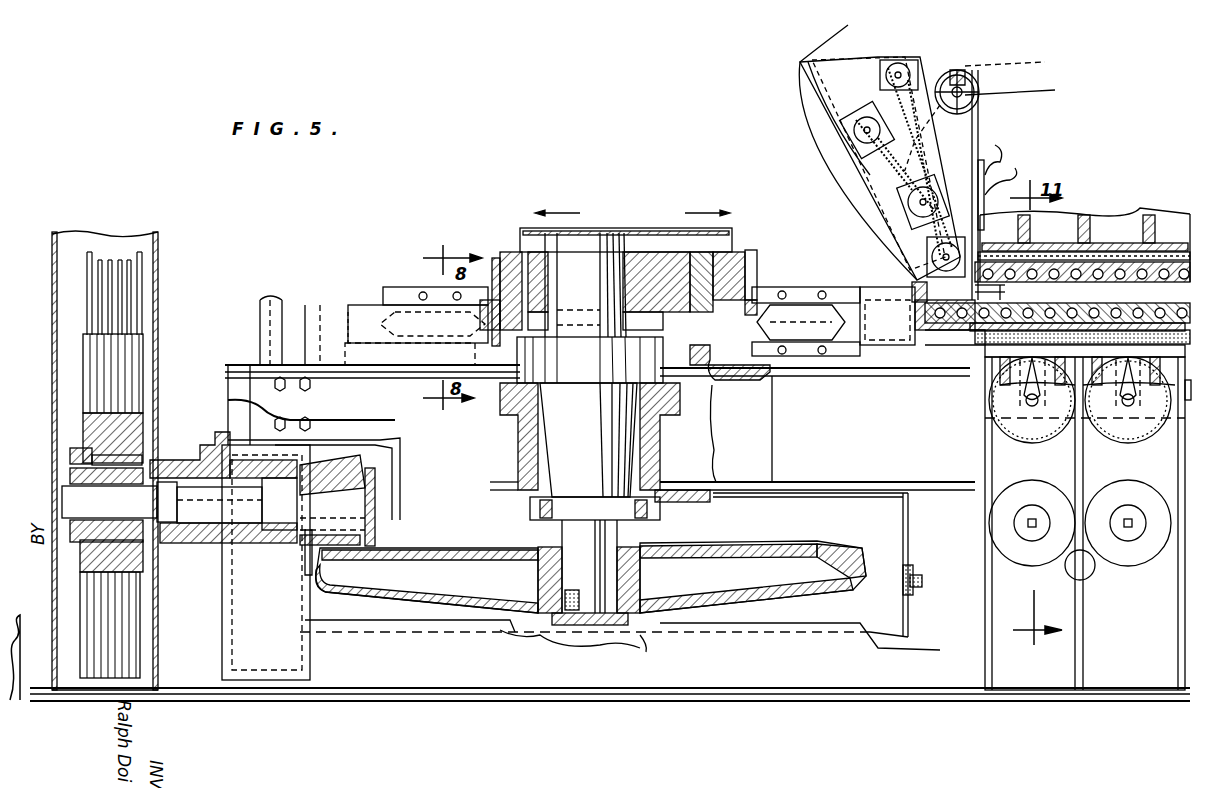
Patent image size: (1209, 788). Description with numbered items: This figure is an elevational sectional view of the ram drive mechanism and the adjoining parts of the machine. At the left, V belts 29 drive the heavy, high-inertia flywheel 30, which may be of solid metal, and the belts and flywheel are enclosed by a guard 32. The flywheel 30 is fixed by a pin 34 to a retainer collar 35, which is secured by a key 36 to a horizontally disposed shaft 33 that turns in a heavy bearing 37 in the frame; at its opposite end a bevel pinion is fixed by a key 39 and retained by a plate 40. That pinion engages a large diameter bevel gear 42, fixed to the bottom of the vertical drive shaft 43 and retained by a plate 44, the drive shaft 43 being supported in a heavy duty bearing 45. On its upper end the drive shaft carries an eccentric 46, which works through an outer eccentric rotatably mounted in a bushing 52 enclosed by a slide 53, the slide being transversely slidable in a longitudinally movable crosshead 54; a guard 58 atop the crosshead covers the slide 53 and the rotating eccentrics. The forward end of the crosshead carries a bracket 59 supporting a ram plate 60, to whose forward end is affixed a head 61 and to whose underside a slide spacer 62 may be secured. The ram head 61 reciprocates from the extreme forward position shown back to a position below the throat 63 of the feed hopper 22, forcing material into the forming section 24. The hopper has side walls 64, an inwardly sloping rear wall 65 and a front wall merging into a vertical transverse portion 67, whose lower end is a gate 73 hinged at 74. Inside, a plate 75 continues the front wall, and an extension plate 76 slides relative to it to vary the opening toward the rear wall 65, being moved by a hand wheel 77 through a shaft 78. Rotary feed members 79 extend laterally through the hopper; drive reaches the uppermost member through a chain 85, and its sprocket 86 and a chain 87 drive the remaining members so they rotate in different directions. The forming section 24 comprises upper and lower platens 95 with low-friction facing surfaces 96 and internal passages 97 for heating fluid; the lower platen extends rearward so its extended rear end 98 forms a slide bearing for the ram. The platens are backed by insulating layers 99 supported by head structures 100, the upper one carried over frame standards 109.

The V belts 29 is at (140, 280).
The guard 32 is at (150, 312).
The flywheel 30 is at (143, 420).
The pin 34 is at (70, 460).
The key 36 is at (68, 478).
The retainer collar 35 is at (70, 530).
The shaft 33 is at (179, 504).
The bearing 37 is at (200, 460).
The plate 40 is at (367, 510).
The key 39 is at (360, 535).
The bevel gear 42 is at (460, 550).
The plate 44 is at (605, 640).
The drive shaft 43 is at (586, 450).
The bearing 45 is at (515, 458).
The guard 58 is at (610, 230).
The eccentric 46 is at (648, 255).
The bushing 52 is at (728, 252).
The slide 53 is at (758, 285).
The crosshead 54 is at (766, 290).
The bracket 59 is at (870, 355).
The extended rear end 98 is at (930, 330).
The insulating layers 99 is at (975, 345).
The head structures 100 is at (990, 355).
The slide spacer 62 is at (968, 340).
The head 61 is at (1000, 292).
The facing surfaces 96 is at (1098, 284).
The platens 95 is at (1140, 270).
The internal passages 97 is at (1115, 245).
The ram plate 60 is at (912, 285).
The throat 63 is at (927, 262).
The rotary feed members 79 is at (855, 140).
The chain 87 is at (865, 160).
The rear wall 65 is at (825, 115).
The sprocket 86 is at (835, 98).
The chain 85 is at (845, 65).
The side walls 64 is at (868, 90).
The shaft 78 is at (962, 86).
The plate 75 is at (1013, 64).
The feed hopper 22 is at (985, 125).
The hand wheel 77 is at (1021, 91).
The vertical transverse portion 67 is at (980, 145).
The extension plate 76 is at (945, 134).
The hinge 74 is at (1000, 160).
The gate 73 is at (1011, 175).
The frame standards 109 is at (1024, 690).
The forming section 24 is at (1075, 712).